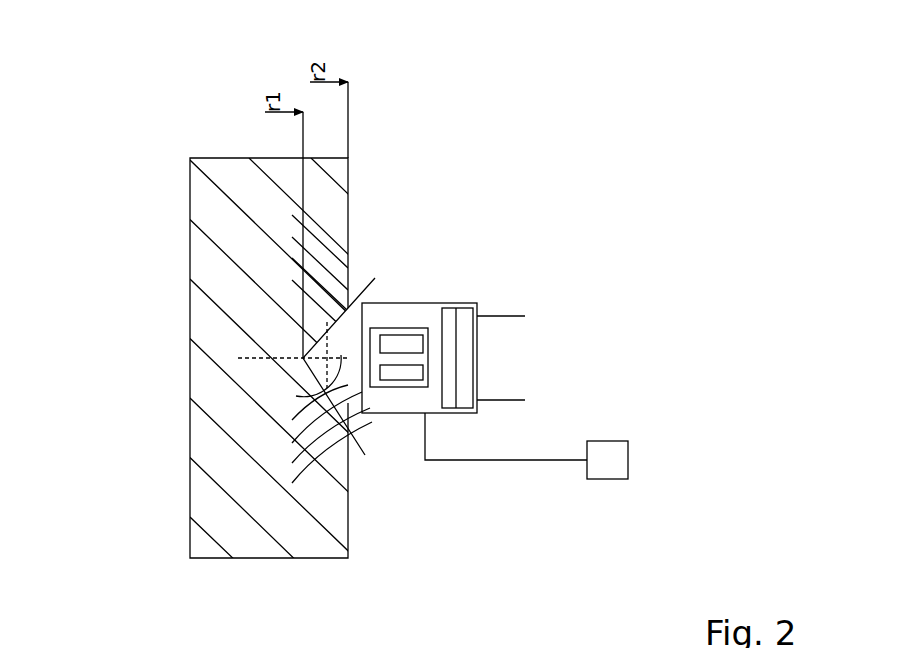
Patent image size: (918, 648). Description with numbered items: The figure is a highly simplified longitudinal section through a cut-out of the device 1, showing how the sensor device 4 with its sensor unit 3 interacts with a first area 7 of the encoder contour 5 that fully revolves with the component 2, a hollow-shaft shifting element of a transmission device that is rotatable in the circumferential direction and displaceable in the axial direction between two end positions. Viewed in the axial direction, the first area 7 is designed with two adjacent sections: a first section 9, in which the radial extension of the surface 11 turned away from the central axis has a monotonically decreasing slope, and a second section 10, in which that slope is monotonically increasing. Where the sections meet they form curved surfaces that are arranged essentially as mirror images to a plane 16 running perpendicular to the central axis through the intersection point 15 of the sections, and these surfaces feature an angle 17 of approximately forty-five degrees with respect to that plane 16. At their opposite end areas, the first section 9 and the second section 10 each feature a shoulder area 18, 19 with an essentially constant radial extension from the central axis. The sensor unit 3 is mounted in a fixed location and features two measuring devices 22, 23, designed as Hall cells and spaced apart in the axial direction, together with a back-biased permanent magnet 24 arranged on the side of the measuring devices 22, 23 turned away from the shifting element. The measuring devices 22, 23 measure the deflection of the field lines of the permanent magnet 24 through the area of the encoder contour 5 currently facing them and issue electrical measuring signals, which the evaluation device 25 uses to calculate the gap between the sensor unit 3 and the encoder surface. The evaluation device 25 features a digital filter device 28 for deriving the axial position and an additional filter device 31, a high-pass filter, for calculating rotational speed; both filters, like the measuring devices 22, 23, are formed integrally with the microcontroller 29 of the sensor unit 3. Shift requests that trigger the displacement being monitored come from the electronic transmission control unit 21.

The device 1 is at (160, 88).
The component 2 is at (232, 156).
The sensor unit 3 is at (552, 326).
The sensor device 4 is at (471, 148).
The encoder contour 5 is at (394, 326).
The first area 7 is at (360, 415).
The first section 9 is at (322, 350).
The second section 10 is at (348, 330).
The surface 11 is at (330, 345).
The intersection point 15 is at (303, 339).
The plane 16 is at (260, 358).
The angle 17 is at (332, 372).
The shoulder area 18 is at (350, 407).
The shoulder area 19 is at (338, 272).
The electronic transmission control unit 21 is at (628, 458).
The measuring device 22 is at (393, 413).
The measuring device 23 is at (396, 303).
The back-biased permanent magnet 24 is at (463, 357).
The evaluation device 25 is at (430, 303).
The filter device 28 is at (443, 303).
The microcontroller 29 is at (410, 413).
The additional filter device 31 is at (427, 413).